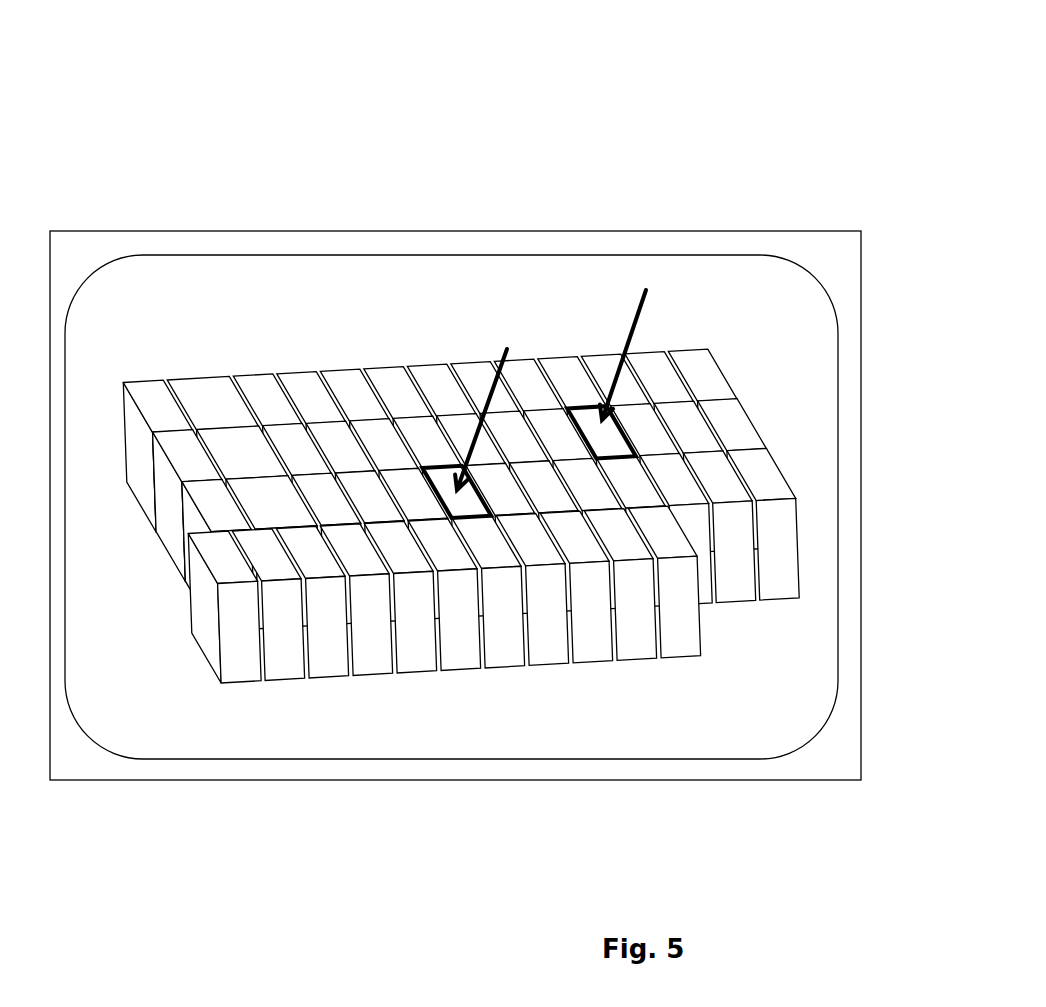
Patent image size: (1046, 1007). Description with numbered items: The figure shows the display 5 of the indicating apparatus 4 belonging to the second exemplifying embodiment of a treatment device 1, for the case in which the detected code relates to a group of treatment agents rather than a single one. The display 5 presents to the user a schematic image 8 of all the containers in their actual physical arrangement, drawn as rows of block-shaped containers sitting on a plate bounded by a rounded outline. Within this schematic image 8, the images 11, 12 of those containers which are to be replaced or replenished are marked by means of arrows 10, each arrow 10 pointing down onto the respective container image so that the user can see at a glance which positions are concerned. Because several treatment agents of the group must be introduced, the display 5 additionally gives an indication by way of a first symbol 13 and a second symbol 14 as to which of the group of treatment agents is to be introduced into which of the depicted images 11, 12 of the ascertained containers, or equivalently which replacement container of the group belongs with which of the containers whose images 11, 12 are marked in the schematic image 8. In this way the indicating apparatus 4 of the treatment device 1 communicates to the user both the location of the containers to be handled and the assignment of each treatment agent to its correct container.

The treatment device 1 is at (662, 132).
The indicating apparatus 4 is at (495, 118).
The display 5 is at (343, 242).
The schematic image 8 is at (430, 721).
The arrow 10 is at (488, 390).
The image 11 is at (442, 470).
The image 12 is at (608, 437).
The first symbol 13 is at (494, 307).
The second symbol 14 is at (620, 273).